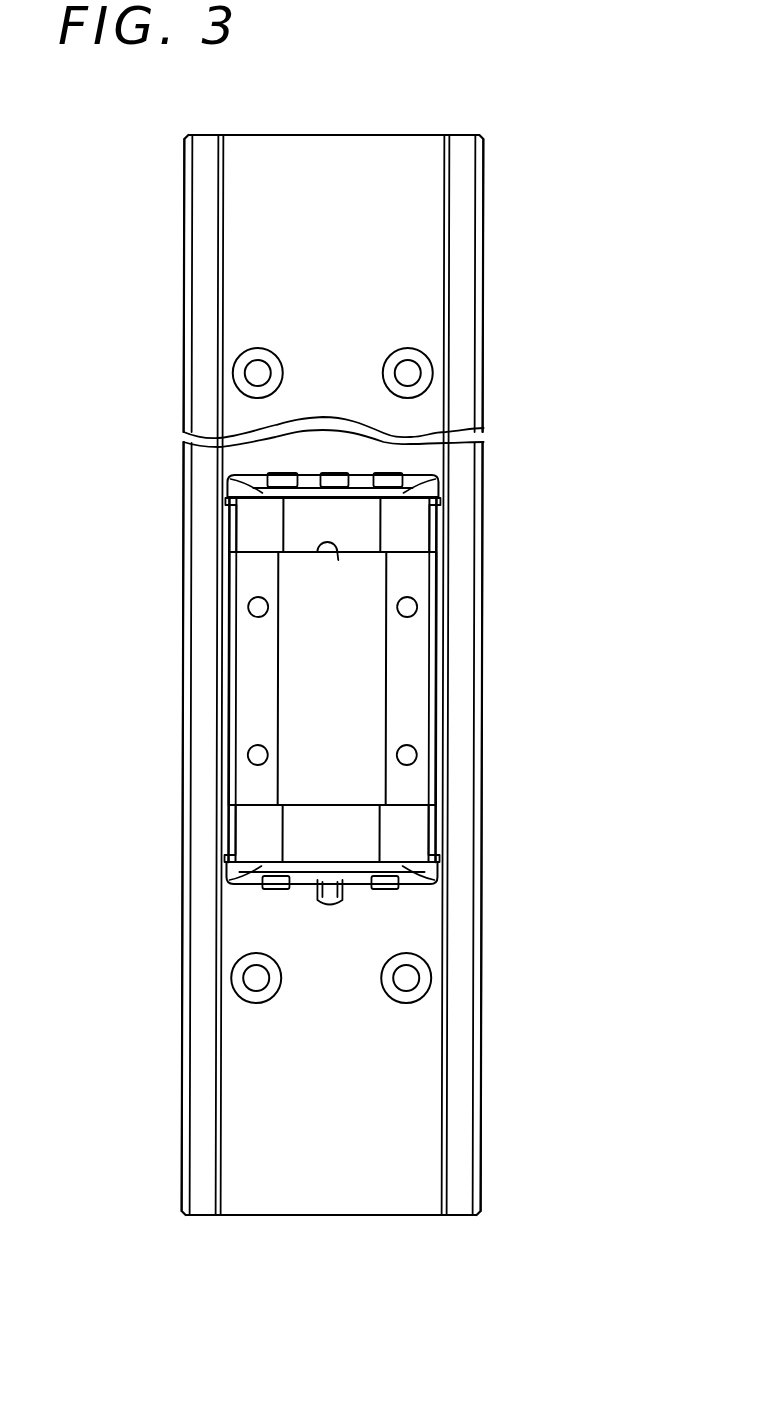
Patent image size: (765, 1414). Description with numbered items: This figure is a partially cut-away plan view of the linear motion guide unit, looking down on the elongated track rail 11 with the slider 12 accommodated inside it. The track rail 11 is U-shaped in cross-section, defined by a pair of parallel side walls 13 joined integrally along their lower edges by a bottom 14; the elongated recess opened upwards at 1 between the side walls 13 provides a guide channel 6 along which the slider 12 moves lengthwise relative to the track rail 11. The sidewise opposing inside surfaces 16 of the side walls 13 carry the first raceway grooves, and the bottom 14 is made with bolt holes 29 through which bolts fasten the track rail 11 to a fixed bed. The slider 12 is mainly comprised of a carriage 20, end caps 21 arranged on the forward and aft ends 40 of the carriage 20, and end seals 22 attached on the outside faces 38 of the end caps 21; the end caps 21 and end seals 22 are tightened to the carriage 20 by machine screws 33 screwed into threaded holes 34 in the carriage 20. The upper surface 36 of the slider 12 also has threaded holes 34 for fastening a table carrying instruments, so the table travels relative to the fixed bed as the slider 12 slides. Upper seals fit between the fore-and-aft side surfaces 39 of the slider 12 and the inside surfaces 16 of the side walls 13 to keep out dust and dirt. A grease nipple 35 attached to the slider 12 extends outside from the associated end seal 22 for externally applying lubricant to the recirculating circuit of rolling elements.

The elongated recess opened upwards 1 is at (270, 1080).
The guide channel 6 is at (347, 263).
The track rail 11 is at (492, 210).
The slider 12 is at (212, 522).
The side walls 13 is at (205, 187).
The bottom 14 is at (327, 183).
The inside surfaces 16 is at (228, 170).
The carriage 20 is at (298, 652).
The end caps 21 is at (410, 540).
The end seals 22 is at (422, 470).
The bolt holes 29 is at (257, 373).
The machine screws 33 is at (280, 478).
The threaded holes 34 is at (248, 607).
The grease nipple 35 is at (333, 906).
The upper surface 36 is at (348, 648).
The outside face 38 is at (230, 478).
The fore-and-aft side surfaces 39 is at (228, 700).
The forward and aft ends 40 is at (338, 560).